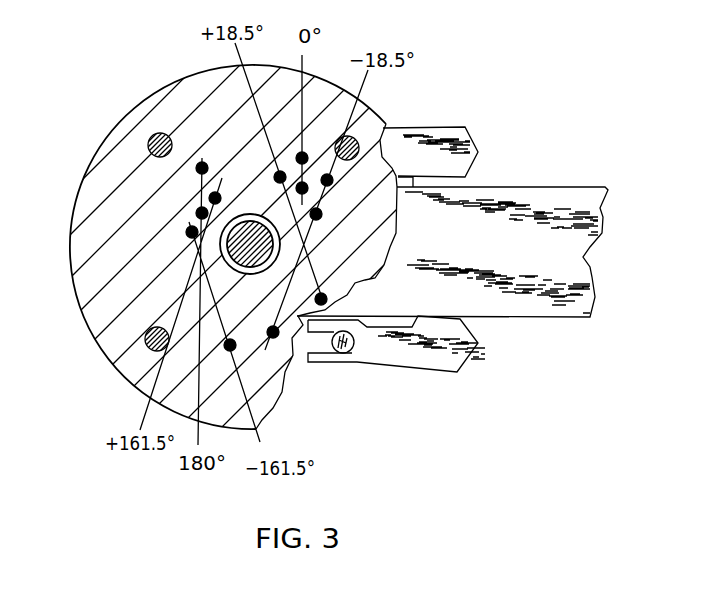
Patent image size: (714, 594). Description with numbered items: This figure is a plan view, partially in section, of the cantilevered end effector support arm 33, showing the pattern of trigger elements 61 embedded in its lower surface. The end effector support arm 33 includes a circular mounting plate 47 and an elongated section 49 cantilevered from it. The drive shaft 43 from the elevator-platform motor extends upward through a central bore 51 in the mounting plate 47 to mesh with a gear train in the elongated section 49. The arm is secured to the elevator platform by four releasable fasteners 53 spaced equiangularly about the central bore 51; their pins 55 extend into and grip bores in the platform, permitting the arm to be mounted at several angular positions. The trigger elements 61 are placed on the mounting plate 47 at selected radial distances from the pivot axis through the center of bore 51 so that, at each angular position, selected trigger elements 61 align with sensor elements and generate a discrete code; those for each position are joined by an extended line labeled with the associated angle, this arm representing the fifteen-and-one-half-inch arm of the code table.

The end effector support arm 33 is at (401, 387).
The drive shaft 43 is at (236, 272).
The mounting plate 47 is at (71, 237).
The elongated section 49 is at (533, 187).
The central bore 51 is at (254, 214).
The fasteners 53 is at (419, 124).
The pins 55 is at (150, 139).
The trigger elements 61 is at (190, 227).